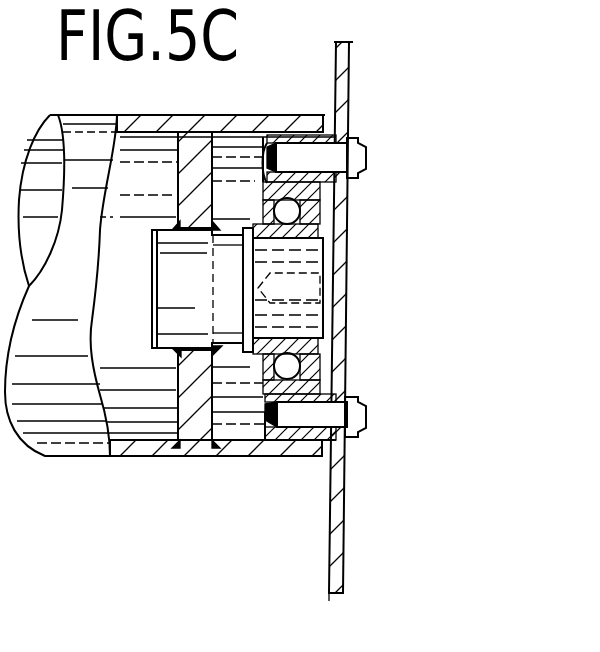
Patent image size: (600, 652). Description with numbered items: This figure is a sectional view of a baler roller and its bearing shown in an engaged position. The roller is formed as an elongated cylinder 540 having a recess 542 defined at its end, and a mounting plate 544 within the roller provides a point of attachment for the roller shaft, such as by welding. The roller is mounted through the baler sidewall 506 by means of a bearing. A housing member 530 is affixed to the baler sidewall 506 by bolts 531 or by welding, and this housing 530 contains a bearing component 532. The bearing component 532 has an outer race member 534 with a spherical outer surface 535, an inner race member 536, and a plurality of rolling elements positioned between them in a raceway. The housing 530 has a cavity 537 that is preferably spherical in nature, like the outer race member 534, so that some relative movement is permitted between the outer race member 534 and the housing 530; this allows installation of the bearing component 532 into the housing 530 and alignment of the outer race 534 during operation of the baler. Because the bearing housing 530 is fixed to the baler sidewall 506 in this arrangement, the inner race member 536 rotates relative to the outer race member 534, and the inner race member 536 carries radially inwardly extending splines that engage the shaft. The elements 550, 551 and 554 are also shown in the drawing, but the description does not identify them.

The baler sidewall 506 is at (337, 66).
The housing member 530 is at (310, 134).
The bolts 531 is at (366, 145).
The bearing component 532 is at (322, 351).
The outer race member 534 is at (262, 362).
The spherical outer surface 535 is at (266, 178).
The inner race member 536 is at (312, 230).
The cavity 537 is at (316, 384).
The elongated cylinder 540 is at (200, 432).
The recess 542 is at (222, 170).
The mounting plate 544 is at (180, 388).
The sleeve 550 is at (162, 324).
The shaft 551 is at (317, 247).
The sleeve insert 554 is at (240, 258).